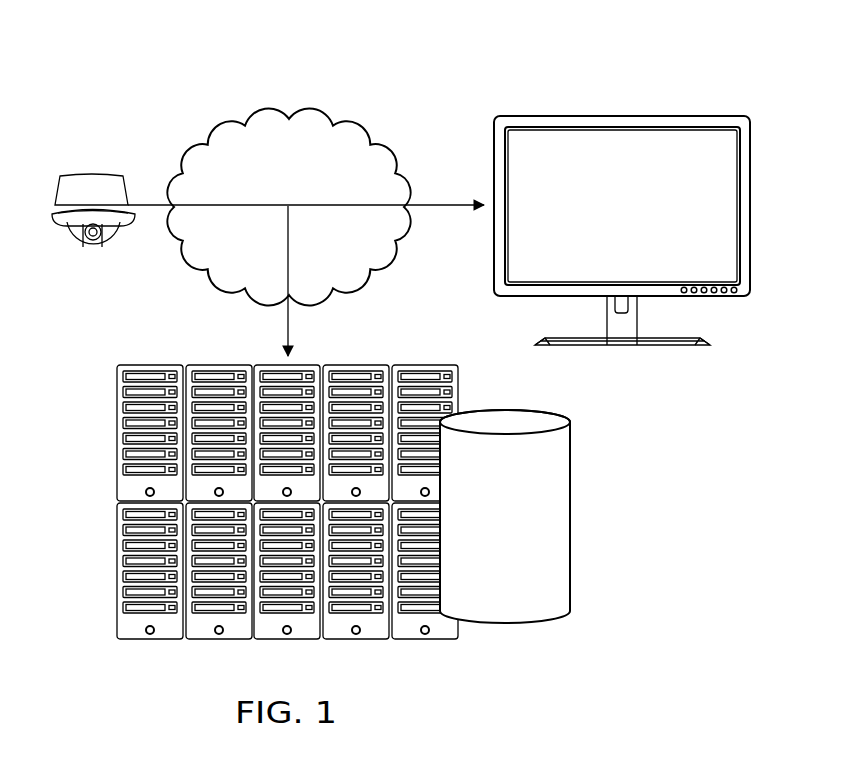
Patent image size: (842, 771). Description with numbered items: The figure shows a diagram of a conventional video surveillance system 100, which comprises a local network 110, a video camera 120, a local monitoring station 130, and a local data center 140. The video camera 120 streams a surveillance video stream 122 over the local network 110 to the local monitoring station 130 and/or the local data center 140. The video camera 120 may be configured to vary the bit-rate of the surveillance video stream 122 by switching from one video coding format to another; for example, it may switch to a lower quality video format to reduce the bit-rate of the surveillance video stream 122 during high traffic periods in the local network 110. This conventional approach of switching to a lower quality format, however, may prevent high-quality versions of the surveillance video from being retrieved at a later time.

The video surveillance system 100 is at (128, 50).
The local network 110 is at (266, 118).
The video camera 120 is at (93, 173).
The surveillance video stream 122 is at (447, 201).
The local monitoring station 130 is at (622, 115).
The local data center 140 is at (146, 358).